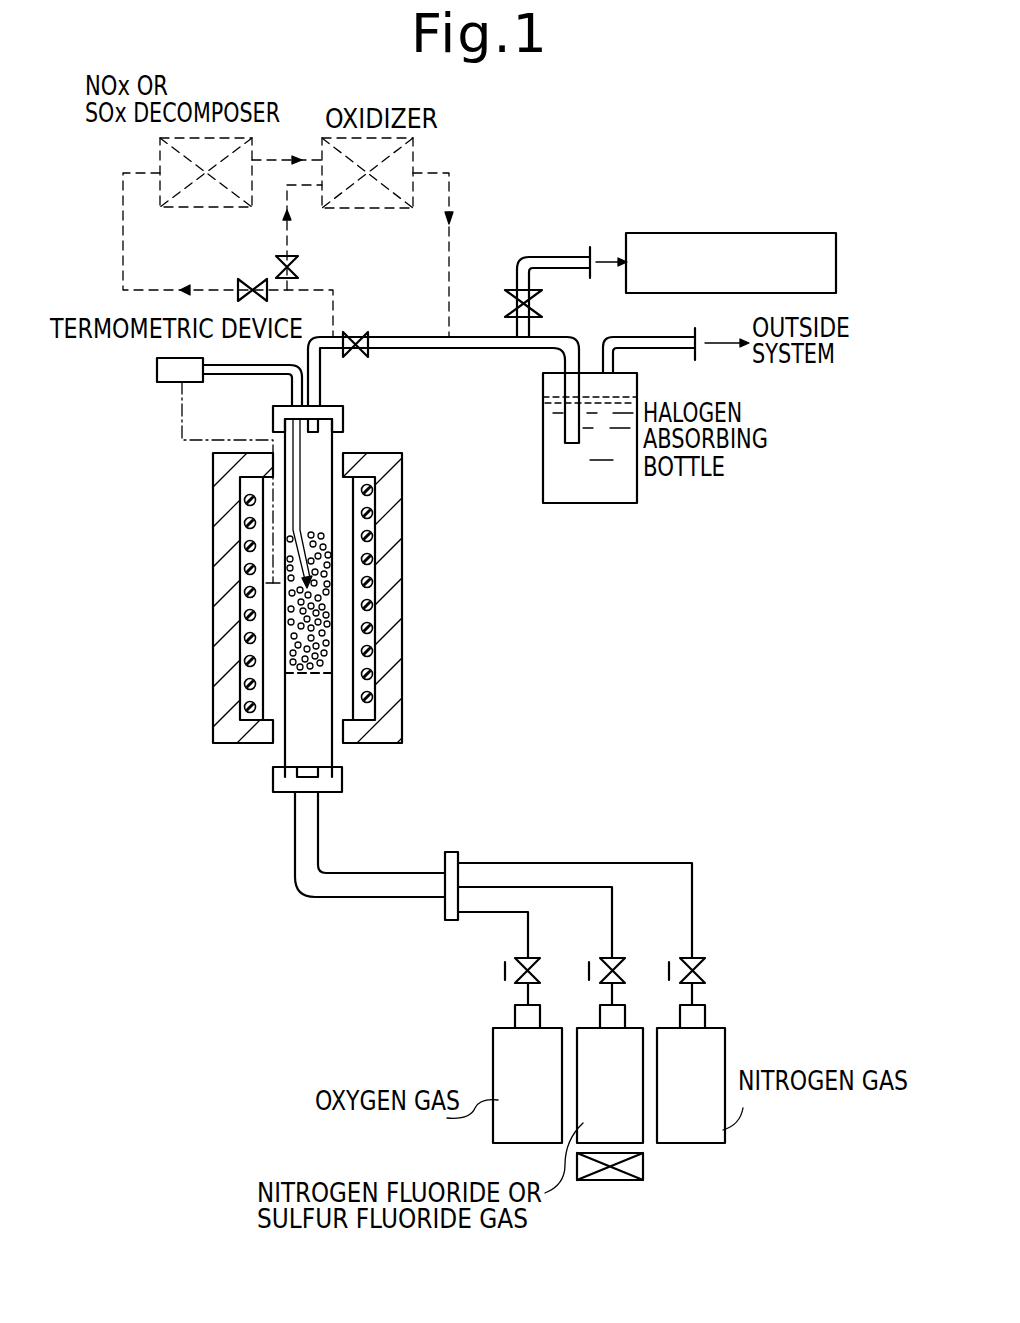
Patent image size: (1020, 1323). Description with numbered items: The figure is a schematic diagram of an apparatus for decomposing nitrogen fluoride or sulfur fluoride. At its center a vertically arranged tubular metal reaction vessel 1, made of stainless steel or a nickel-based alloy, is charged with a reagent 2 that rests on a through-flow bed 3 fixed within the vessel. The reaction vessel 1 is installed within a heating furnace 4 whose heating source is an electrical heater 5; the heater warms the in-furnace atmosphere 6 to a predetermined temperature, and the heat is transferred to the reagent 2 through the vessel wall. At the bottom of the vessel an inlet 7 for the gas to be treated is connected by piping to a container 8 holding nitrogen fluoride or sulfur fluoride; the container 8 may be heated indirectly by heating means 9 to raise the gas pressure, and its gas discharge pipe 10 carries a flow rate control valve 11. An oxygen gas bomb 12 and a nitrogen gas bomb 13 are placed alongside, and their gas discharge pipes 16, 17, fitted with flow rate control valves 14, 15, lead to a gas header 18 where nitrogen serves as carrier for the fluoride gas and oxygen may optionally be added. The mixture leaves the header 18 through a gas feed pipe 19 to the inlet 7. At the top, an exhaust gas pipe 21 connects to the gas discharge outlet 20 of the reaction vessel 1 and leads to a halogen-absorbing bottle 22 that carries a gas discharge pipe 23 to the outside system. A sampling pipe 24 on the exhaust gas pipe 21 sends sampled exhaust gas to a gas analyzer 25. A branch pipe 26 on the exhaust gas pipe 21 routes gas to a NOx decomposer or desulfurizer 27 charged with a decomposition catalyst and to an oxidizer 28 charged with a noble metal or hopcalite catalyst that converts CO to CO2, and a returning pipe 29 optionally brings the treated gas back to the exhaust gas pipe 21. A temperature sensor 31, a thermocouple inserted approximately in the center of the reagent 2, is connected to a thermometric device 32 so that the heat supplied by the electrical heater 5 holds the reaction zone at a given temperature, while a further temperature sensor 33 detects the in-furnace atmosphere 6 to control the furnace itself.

The reaction vessel 1 is at (333, 690).
The reagent 2 is at (318, 633).
The through-flow bed 3 is at (307, 675).
The heating furnace 4 is at (223, 648).
The electrical heater 5 is at (247, 613).
The in-furnace atmosphere 6 is at (273, 673).
The inlet for a gas to be treated 7 is at (310, 770).
The container 8 is at (630, 1028).
The heating means 9 is at (643, 1163).
The gas discharge pipe 10 is at (612, 923).
The flow rate control valve 11 is at (600, 973).
The oxygen gas bomb 12 is at (507, 1028).
The nitrogen gas bomb 13 is at (727, 1033).
The flow rate control valve 14 is at (515, 972).
The flow rate control valve 15 is at (680, 973).
The gas discharge pipe 16 is at (528, 928).
The gas discharge pipe 17 is at (693, 912).
The gas header 18 is at (442, 868).
The gas feed pipe 19 is at (342, 873).
The gas discharge outlet 20 is at (318, 430).
The exhaust gas pipe 21 is at (397, 349).
The halogen-absorbing bottle 22 is at (580, 503).
The gas discharge pipe 23 is at (640, 337).
The sampling pipe 24 is at (517, 257).
The gas analyzer 25 is at (757, 233).
The branch pipe 26 is at (328, 312).
The NOx decomposer or desulfurizer 27 is at (198, 210).
The oxidizer 28 is at (375, 210).
The returning pipe 29 is at (447, 233).
The temperature sensor 31 is at (313, 590).
The thermometric device 32 is at (168, 383).
The temperature sensor 33 is at (273, 583).